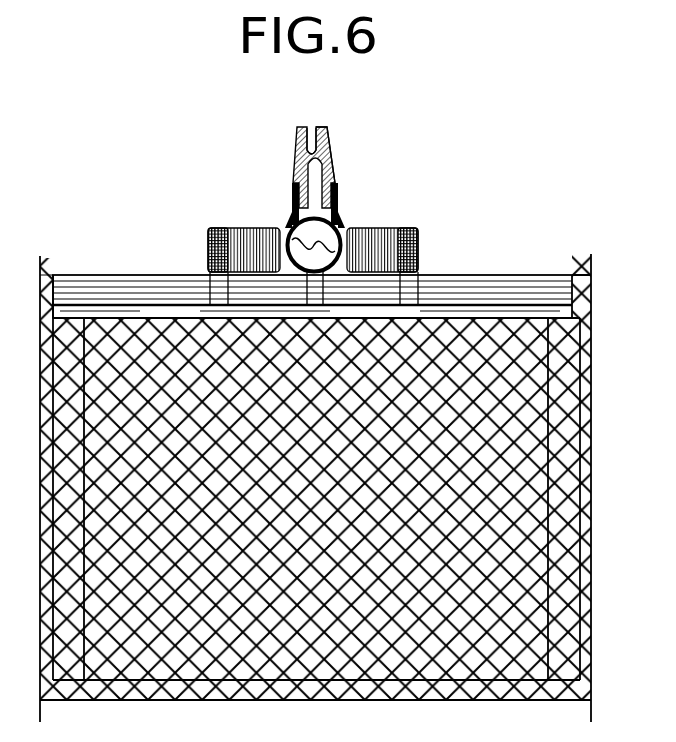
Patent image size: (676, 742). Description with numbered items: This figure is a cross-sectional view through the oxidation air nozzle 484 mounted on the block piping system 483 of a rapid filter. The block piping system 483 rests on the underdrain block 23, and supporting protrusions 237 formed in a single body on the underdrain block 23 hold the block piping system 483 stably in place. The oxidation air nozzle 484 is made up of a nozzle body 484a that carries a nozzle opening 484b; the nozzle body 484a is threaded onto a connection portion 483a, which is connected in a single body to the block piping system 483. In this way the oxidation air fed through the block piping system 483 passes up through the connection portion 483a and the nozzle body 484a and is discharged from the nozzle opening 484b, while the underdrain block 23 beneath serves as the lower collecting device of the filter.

The underdrain block 23 is at (512, 273).
The supporting protrusions 237 is at (390, 227).
The block piping system 483 is at (299, 246).
The connection portion 483a is at (292, 195).
The oxidation air nozzle 484 is at (297, 140).
The nozzle body 484a is at (331, 146).
The nozzle opening 484b is at (313, 127).